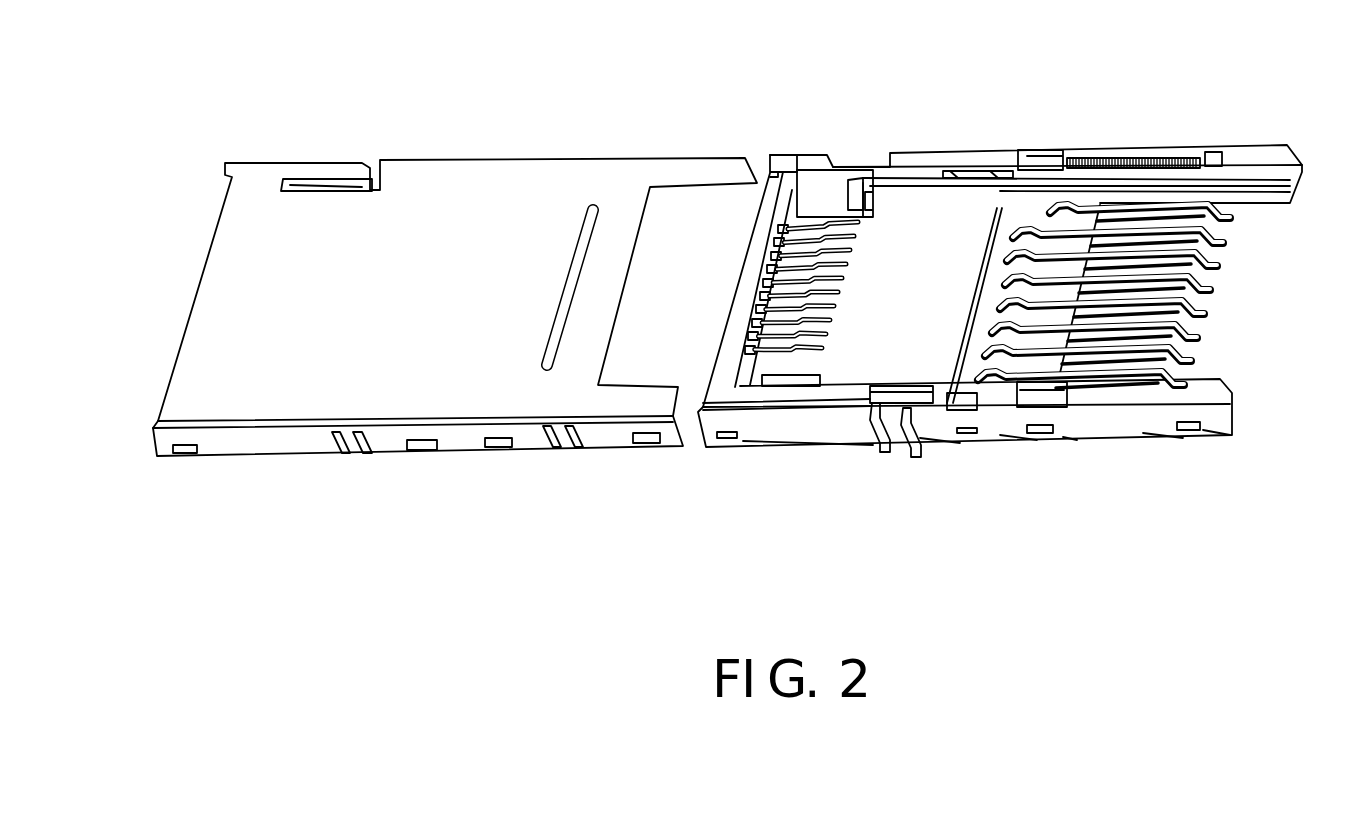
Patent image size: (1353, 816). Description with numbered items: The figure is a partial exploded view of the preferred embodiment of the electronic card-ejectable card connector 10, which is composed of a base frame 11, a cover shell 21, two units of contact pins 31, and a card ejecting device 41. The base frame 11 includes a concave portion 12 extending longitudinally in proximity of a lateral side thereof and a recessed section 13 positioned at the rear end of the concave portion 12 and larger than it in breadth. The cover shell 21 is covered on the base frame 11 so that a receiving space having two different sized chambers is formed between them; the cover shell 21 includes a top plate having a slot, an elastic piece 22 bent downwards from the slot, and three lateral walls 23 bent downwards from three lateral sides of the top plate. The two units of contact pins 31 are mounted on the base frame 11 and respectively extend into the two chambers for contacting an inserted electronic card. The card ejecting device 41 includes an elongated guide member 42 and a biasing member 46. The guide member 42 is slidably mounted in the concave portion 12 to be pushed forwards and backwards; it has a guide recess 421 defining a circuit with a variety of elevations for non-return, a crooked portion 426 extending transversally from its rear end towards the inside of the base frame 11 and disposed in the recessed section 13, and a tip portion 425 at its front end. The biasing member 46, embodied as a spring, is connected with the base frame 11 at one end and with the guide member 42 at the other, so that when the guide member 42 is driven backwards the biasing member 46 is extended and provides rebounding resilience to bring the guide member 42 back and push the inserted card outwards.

The electronic card-ejectable card connector 10 is at (555, 502).
The base frame 11 is at (1257, 207).
The concave portion 12 is at (822, 186).
The recessed section 13 is at (810, 213).
The cover shell 21 is at (520, 185).
The elastic piece 22 is at (331, 180).
The lateral walls 23 is at (287, 443).
The contact pins 31 is at (1187, 357).
The card ejecting device 41 is at (1023, 150).
The guide member 42 is at (1032, 150).
The guide recess 421 is at (963, 167).
The tip portion 425 is at (1085, 180).
The crooked portion 426 is at (866, 176).
The biasing member 46 is at (1153, 155).